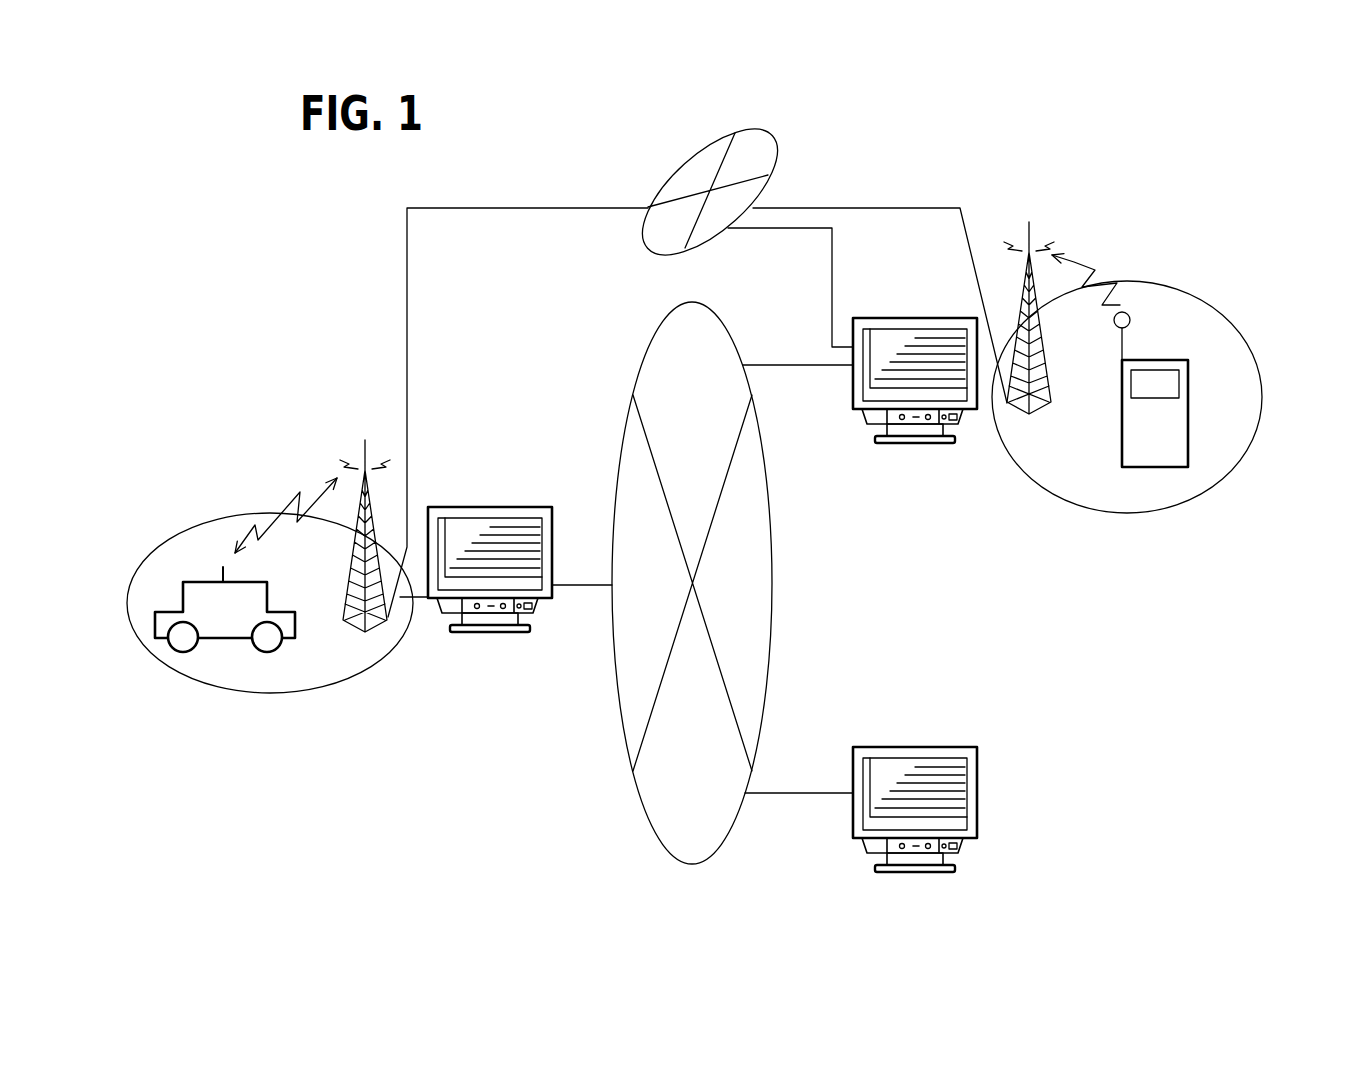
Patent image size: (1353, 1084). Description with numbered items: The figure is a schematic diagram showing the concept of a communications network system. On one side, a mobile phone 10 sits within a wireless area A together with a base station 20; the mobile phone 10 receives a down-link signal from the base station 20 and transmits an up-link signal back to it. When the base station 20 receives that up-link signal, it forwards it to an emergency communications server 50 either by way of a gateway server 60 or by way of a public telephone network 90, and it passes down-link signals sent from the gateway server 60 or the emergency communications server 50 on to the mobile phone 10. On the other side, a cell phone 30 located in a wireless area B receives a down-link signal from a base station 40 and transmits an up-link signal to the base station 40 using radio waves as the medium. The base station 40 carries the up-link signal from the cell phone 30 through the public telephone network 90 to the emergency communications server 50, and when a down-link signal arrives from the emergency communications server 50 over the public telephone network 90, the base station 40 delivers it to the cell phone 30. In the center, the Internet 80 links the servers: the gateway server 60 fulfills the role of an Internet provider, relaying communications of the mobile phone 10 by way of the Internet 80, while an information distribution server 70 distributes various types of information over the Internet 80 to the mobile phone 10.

The mobile phone 10 is at (217, 650).
The base station 20 is at (371, 447).
The cell phone 30 is at (1116, 470).
The base station 40 is at (1005, 285).
The emergency communications server 50 is at (851, 392).
The gateway server 60 is at (432, 605).
The information distribution server 70 is at (851, 818).
The Internet 80 is at (773, 628).
The public telephone network 90 is at (778, 150).
The wireless area A is at (166, 676).
The wireless area B is at (1218, 488).